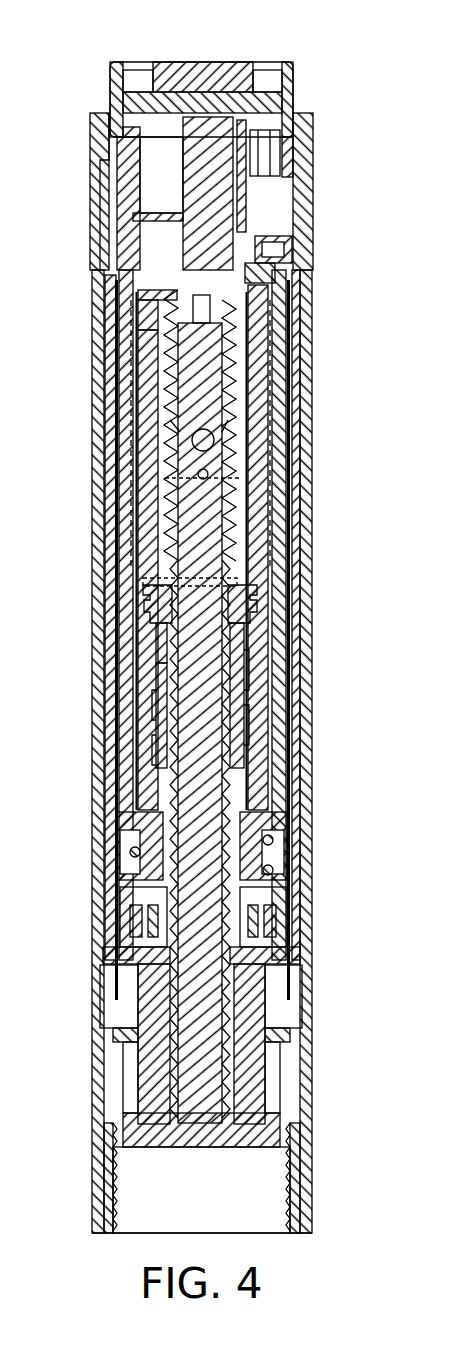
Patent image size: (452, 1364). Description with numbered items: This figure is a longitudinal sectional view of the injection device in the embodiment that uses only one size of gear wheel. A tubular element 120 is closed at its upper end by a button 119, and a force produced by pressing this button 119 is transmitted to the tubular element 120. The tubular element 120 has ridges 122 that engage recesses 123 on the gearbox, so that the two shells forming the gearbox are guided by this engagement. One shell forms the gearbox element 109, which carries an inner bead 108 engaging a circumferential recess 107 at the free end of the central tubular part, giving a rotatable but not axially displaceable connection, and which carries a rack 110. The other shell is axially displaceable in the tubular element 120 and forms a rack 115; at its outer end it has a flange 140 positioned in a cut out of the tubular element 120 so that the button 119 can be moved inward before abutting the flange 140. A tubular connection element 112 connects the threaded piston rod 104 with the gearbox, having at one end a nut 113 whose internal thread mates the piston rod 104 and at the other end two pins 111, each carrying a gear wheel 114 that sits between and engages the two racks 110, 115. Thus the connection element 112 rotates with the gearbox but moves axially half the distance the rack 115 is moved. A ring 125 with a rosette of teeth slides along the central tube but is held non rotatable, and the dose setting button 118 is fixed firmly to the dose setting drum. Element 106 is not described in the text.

The threaded piston rod 104 is at (213, 792).
The drive sleeve 106 is at (162, 684).
The circumferential recess 107 is at (258, 608).
The inner bead 108 is at (143, 606).
The gearbox element 109 is at (147, 530).
The rack 110 is at (136, 307).
The pins 111 is at (215, 437).
The tubular connection element 112 is at (233, 750).
The nut 113 is at (227, 1025).
The gear wheel 114 is at (212, 473).
The rack 115 is at (268, 288).
The dose setting button 118 is at (302, 152).
The button 119 is at (300, 58).
The tubular element 120 is at (282, 330).
The ridges 122 is at (312, 375).
The recesses 123 is at (130, 296).
The ring 125 is at (253, 859).
The flange 140 is at (282, 252).